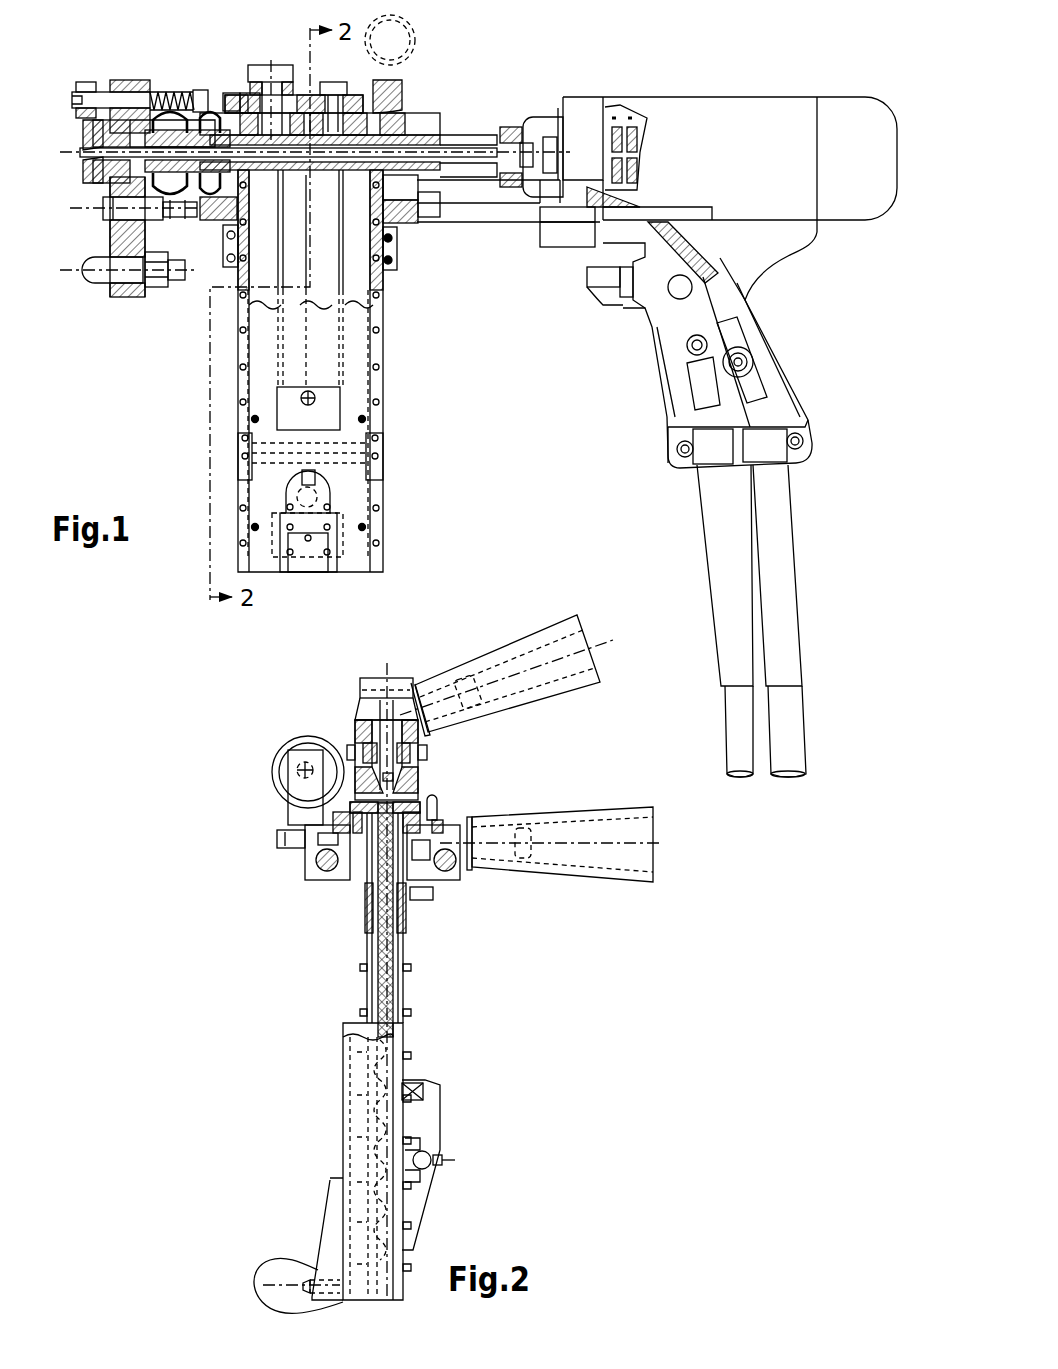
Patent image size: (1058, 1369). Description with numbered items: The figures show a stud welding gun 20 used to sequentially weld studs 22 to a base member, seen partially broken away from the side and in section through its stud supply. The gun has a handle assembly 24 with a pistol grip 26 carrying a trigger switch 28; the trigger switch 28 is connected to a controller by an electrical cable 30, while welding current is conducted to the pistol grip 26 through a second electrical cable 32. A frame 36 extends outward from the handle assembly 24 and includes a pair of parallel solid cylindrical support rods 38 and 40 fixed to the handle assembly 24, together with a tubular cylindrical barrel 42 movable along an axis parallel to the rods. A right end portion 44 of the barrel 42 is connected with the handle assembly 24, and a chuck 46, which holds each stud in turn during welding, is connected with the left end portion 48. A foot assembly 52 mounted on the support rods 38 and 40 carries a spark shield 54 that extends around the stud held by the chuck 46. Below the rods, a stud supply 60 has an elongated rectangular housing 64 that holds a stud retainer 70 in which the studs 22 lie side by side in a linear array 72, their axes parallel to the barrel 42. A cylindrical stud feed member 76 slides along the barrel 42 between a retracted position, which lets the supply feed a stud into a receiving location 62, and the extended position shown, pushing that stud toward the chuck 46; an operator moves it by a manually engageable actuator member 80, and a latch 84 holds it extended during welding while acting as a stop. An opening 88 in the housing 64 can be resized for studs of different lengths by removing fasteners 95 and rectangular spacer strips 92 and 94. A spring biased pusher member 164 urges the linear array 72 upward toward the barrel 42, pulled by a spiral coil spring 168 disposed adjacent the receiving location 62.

In FIG. 1, the stud welding gun 20 is at (772, 66).
In FIG. 1, the stud 22 is at (92, 157).
In FIG. 2, the stud 22 is at (358, 958).
In FIG. 1, the handle assembly 24 is at (888, 94).
In FIG. 1, the pistol grip 26 is at (783, 353).
In FIG. 1, the trigger switch 28 is at (603, 288).
In FIG. 1, the electrical cable 30 is at (727, 603).
In FIG. 1, the second electrical cable 32 is at (776, 532).
In FIG. 1, the frame 36 is at (493, 128).
In FIG. 2, the support rod 38 is at (320, 877).
In FIG. 1, the support rod 40 is at (452, 202).
In FIG. 2, the support rod 40 is at (453, 867).
In FIG. 1, the barrel 42 is at (463, 134).
In FIG. 1, the right end portion of barrel 44 is at (523, 130).
In FIG. 1, the chuck 46 is at (118, 147).
In FIG. 1, the left end portion of barrel 48 is at (178, 145).
In FIG. 1, the foot assembly 52 is at (122, 300).
In FIG. 1, the spark shield 54 is at (92, 133).
In FIG. 1, the stud supply 60 is at (233, 508).
In FIG. 2, the stud supply 60 is at (327, 1175).
In FIG. 1, the receiving location 62 is at (265, 168).
In FIG. 1, the housing 64 is at (237, 487).
In FIG. 2, the housing 64 is at (400, 992).
In FIG. 1, the stud retainer 70 is at (335, 297).
In FIG. 2, the stud retainer 70 is at (393, 992).
In FIG. 2, the linear array 72 is at (377, 994).
In FIG. 1, the stud feed member 76 is at (367, 143).
In FIG. 1, the actuator member 80 is at (426, 48).
In FIG. 2, the actuator member 80 is at (551, 622).
In FIG. 1, the latch 84 is at (283, 63).
In FIG. 1, the opening 88 is at (322, 275).
In FIG. 1, the spacer strip 92 is at (265, 273).
In FIG. 1, the spacer strip 94 is at (355, 237).
In FIG. 1, the fasteners 95 is at (250, 419).
In FIG. 2, the pusher member 164 is at (250, 1305).
In FIG. 2, the spring 168 is at (273, 752).